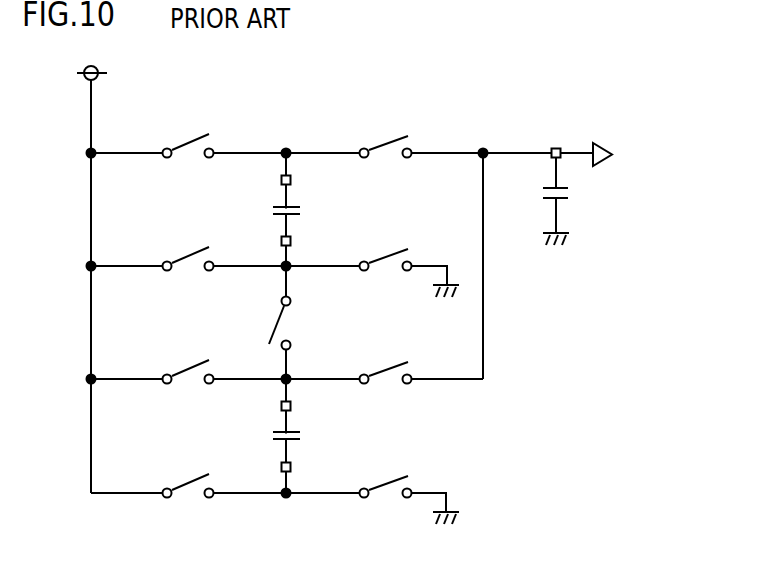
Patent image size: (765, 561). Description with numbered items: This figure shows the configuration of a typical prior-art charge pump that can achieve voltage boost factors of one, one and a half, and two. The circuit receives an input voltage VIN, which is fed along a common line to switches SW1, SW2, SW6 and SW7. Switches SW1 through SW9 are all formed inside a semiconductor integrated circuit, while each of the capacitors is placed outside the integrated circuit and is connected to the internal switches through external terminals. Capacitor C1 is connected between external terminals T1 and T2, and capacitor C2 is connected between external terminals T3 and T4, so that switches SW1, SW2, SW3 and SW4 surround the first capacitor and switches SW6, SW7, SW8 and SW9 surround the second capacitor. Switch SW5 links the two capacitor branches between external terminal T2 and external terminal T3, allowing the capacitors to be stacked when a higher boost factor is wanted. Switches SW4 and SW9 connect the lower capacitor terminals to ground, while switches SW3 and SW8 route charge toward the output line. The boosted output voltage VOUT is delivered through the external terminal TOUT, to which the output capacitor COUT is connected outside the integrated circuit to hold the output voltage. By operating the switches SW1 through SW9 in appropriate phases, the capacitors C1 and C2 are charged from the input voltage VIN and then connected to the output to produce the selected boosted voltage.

The input voltage VIN is at (91, 60).
The switch SW1 is at (191, 141).
The switch SW2 is at (191, 256).
The switch SW3 is at (389, 142).
The switch SW4 is at (389, 255).
The switch SW5 is at (278, 322).
The switch SW6 is at (191, 368).
The switch SW7 is at (191, 480).
The switch SW8 is at (387, 370).
The switch SW9 is at (387, 484).
The external terminal T1 is at (281, 180).
The external terminal T2 is at (281, 241).
The external terminal T3 is at (281, 406).
The external terminal T4 is at (281, 467).
The capacitor C1 is at (273, 210).
The capacitor C2 is at (273, 435).
The external terminal TOUT is at (557, 148).
The output voltage VOUT is at (620, 157).
The capacitor COUT is at (562, 203).